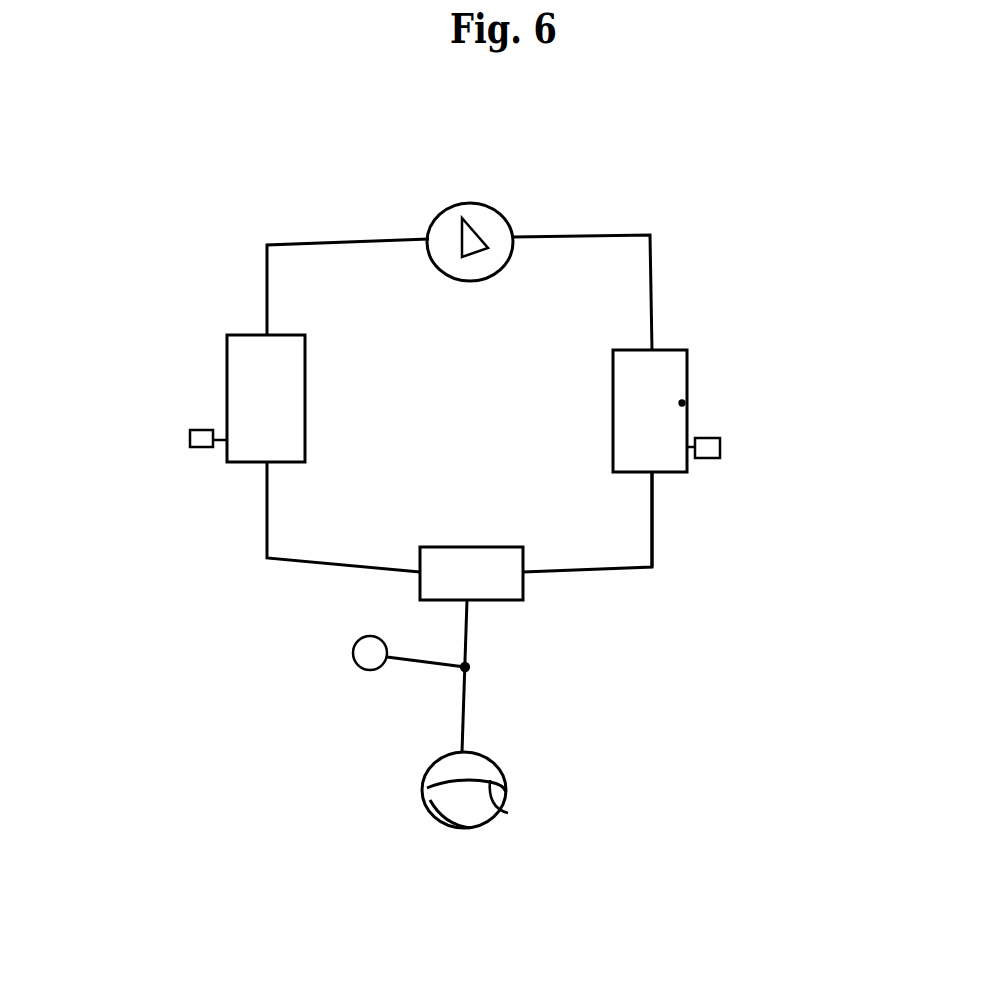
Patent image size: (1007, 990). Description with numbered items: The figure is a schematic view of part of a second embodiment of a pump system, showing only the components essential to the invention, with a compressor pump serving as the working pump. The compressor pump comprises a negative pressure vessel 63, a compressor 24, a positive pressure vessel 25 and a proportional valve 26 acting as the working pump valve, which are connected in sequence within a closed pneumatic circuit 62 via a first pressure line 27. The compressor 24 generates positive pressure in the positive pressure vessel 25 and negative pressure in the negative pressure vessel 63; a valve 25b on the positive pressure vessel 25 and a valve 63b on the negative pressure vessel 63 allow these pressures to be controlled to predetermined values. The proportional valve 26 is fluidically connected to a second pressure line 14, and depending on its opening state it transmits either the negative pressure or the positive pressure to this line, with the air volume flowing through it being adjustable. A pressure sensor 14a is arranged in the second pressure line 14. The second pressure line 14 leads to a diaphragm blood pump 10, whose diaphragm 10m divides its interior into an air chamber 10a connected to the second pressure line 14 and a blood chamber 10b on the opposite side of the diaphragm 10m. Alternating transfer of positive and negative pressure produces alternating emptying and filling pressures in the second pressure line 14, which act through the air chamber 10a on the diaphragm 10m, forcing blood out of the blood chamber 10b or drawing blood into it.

The diaphragm blood pump 10 is at (597, 770).
The air chamber 10a is at (358, 813).
The blood chamber 10b is at (478, 878).
The diaphragm 10m is at (578, 842).
The second pressure line 14 is at (567, 688).
The pressure sensor 14a is at (320, 714).
The compressor 24 is at (510, 130).
The positive pressure vessel 25 is at (763, 322).
The valve 25b is at (850, 462).
The proportional valve 26 is at (612, 635).
The first pressure line 27 is at (752, 537).
The closed pneumatic circuit 62 is at (607, 227).
The negative pressure vessel 63 is at (245, 363).
The valve 63b is at (188, 440).